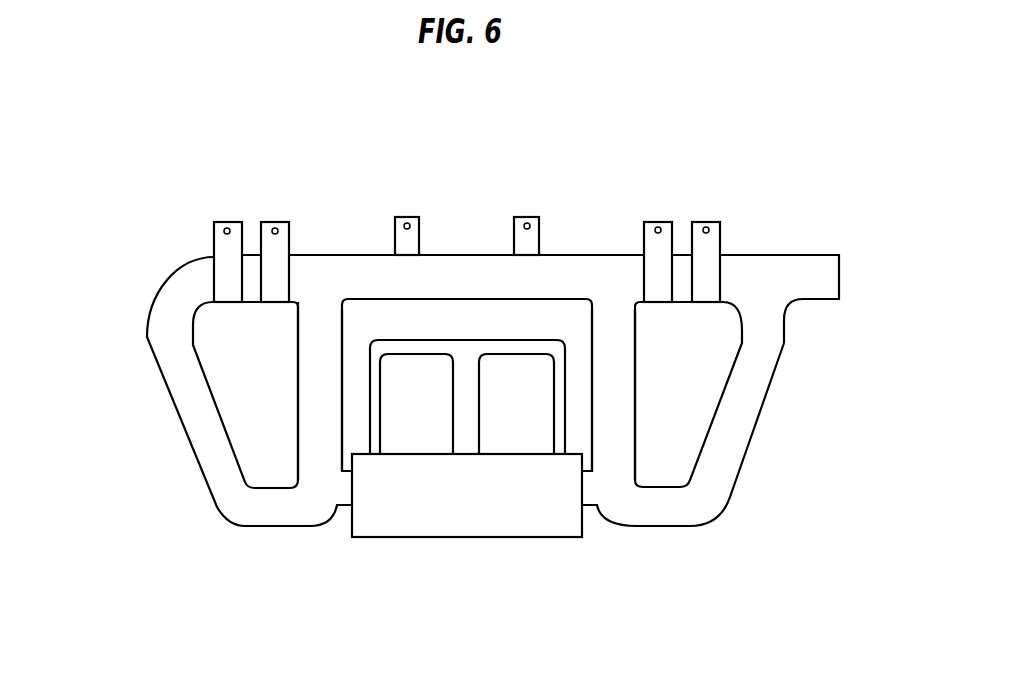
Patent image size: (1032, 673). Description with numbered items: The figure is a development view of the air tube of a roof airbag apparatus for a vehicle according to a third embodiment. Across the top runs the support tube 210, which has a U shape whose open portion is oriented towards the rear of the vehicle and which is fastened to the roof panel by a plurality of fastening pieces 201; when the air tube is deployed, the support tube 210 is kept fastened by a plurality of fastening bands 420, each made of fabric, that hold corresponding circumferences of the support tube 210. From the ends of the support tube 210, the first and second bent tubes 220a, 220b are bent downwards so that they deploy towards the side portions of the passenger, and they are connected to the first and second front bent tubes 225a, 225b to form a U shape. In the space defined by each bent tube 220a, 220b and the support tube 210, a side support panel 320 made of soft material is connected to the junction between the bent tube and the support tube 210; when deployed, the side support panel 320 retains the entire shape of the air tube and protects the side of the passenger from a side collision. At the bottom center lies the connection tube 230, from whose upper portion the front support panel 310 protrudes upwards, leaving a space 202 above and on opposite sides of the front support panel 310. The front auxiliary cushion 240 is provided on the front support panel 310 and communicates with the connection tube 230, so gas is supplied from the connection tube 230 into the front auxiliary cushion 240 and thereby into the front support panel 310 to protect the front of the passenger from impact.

The fastening piece 201 is at (527, 232).
The space 202 is at (560, 315).
The support tube 210 is at (788, 277).
The first bent tube 220a is at (212, 461).
The second bent tube 220b is at (723, 452).
The first front bent tube 225a is at (317, 407).
The second front bent tube 225b is at (610, 410).
The connection tube 230 is at (520, 493).
The front auxiliary cushion 240 is at (418, 407).
The front support panel 310 is at (462, 353).
The side support panel 320 is at (237, 385).
The fastening band 420 is at (276, 242).